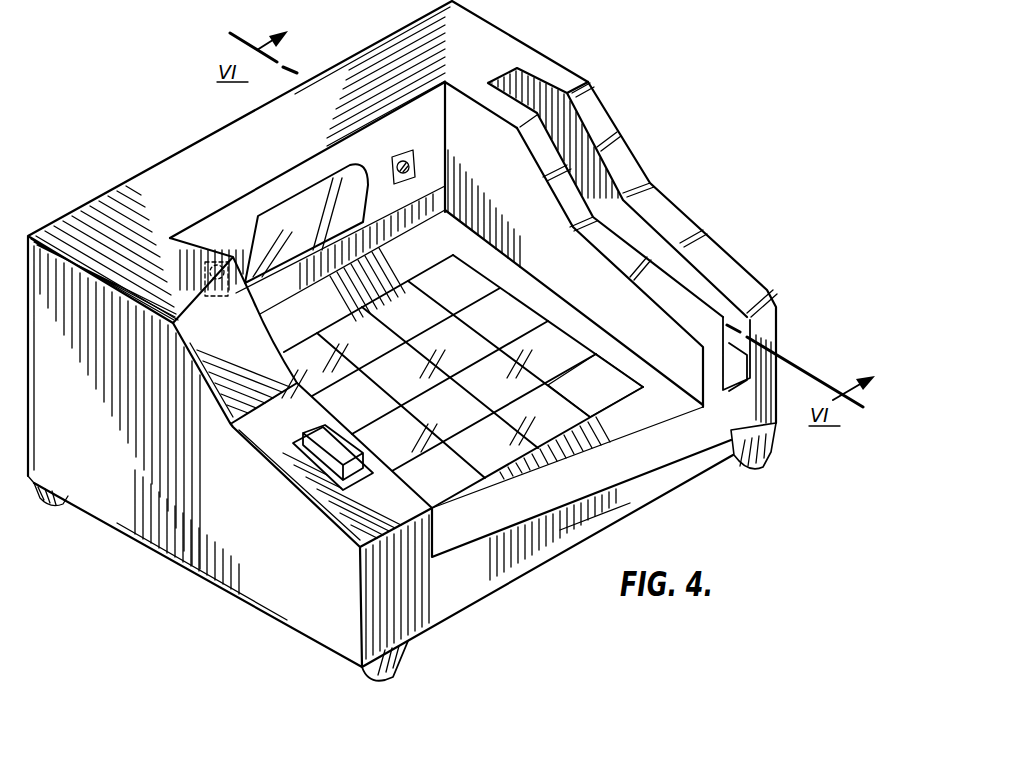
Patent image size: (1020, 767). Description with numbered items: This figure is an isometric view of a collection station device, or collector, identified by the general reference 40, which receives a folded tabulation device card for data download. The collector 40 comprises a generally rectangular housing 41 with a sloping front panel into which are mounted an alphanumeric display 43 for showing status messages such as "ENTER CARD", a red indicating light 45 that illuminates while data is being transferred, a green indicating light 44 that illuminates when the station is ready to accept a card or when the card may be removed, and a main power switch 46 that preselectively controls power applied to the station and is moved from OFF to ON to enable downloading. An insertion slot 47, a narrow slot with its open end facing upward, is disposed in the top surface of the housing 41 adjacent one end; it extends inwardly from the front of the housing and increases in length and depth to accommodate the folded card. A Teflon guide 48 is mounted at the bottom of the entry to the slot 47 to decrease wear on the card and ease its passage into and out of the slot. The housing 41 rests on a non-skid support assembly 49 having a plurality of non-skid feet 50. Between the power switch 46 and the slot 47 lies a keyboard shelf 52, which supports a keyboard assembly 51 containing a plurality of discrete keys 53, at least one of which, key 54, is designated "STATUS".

The collection station device 40 is at (182, 126).
The housing 41 is at (193, 574).
The alphanumeric display 43 is at (308, 185).
The green indicating light 44 is at (220, 307).
The red indicating light 45 is at (398, 186).
The main power switch 46 is at (316, 430).
The insertion slot 47 is at (650, 240).
The Teflon guide 48 is at (732, 393).
The non-skid support assembly 49 is at (368, 689).
The non-skid feet 50 is at (407, 660).
The keyboard assembly 51 is at (630, 412).
The keyboard shelf 52 is at (517, 279).
The discrete keys 53 is at (404, 300).
The STATUS key 54 is at (612, 380).